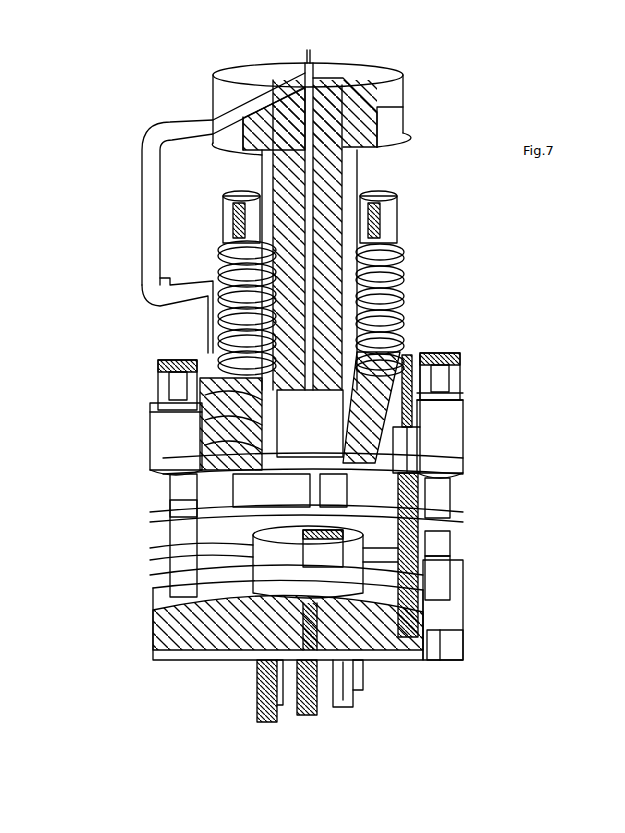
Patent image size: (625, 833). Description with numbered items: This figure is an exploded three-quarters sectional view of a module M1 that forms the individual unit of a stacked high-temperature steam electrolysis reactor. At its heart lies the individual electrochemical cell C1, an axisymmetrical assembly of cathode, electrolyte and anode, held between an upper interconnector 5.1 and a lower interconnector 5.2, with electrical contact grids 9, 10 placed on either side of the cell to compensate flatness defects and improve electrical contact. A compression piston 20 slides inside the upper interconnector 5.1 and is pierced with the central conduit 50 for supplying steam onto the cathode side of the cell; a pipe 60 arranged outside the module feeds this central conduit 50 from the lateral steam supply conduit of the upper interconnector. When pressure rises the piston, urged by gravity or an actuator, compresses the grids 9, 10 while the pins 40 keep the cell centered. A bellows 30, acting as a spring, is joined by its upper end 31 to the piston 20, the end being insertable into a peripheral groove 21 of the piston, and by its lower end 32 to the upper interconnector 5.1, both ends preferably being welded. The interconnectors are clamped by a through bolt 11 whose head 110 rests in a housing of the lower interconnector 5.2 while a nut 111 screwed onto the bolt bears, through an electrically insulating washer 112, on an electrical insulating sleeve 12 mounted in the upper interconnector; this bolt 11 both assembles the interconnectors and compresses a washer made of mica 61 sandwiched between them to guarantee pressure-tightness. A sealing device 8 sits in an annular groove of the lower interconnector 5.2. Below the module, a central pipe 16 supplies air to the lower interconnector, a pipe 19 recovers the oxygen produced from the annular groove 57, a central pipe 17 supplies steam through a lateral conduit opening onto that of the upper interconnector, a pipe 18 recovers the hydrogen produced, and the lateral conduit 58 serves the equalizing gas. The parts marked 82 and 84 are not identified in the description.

The module M1 is at (80, 273).
The sealing device 8 is at (310, 62).
The compression piston 20 is at (388, 107).
The peripheral groove 21 is at (375, 150).
The central conduit for supplying steam 50 is at (334, 70).
The pipe 60 is at (258, 85).
The upper end 31 is at (397, 220).
The bellows 30 is at (404, 272).
The lower end 32 is at (413, 362).
The nut 111 is at (160, 377).
The washer 112 is at (465, 395).
The head 110 is at (443, 480).
The bolt 11 is at (553, 333).
The bearing ring 82 is at (157, 413).
The individual electrochemical cell C1 is at (167, 478).
The electrical contact grid 9 is at (215, 495).
The electrical contact grid 10 is at (320, 495).
The upper interconnector 5.1 is at (450, 502).
The electrical insulating sleeve 12 is at (453, 531).
The washer made of mica 61 is at (450, 560).
The lateral conduit 58 is at (248, 657).
The pins 40 is at (153, 610).
The lower interconnector 5.2 is at (447, 630).
The pin 84 is at (372, 662).
The annular groove 57 is at (340, 670).
The pipe for recovering the hydrogen produced 18 is at (353, 695).
The central pipe for supplying air 16 is at (307, 712).
The pipe for recovering the oxygen produced 19 is at (277, 705).
The central pipe for supplying steam 17 is at (260, 707).